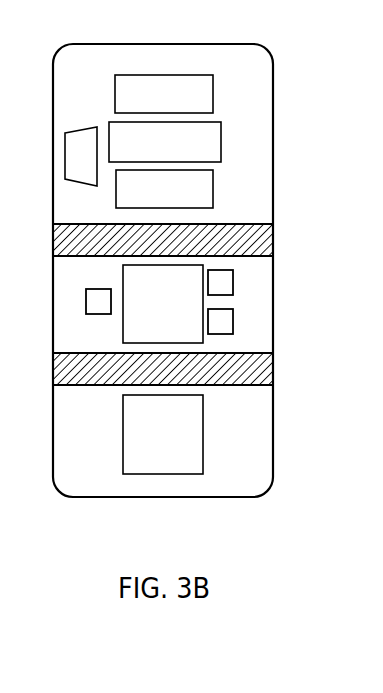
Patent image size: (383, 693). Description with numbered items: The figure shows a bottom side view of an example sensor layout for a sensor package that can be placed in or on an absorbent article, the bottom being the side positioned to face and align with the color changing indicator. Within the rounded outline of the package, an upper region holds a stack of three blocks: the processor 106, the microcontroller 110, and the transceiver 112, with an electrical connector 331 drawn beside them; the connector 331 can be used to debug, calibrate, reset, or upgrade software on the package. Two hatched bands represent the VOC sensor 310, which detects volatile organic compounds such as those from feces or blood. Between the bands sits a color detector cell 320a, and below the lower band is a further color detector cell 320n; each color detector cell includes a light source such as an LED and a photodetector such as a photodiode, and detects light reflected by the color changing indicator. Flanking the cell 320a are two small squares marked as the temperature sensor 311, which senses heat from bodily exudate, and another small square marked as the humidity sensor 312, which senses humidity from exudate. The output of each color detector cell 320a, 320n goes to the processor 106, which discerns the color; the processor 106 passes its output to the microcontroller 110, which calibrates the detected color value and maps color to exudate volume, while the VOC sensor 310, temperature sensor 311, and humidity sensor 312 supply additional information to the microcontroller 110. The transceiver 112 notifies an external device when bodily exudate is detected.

The processor 106 is at (153, 110).
The microcontroller 110 is at (154, 158).
The transceiver 112 is at (154, 204).
The electrical connector 331 is at (71, 162).
The VOC sensor 310 is at (177, 304).
The temperature sensor 311 is at (226, 325).
The humidity sensor 312 is at (95, 303).
The color detector cell 320a is at (191, 330).
The color detector cell 320n is at (191, 462).